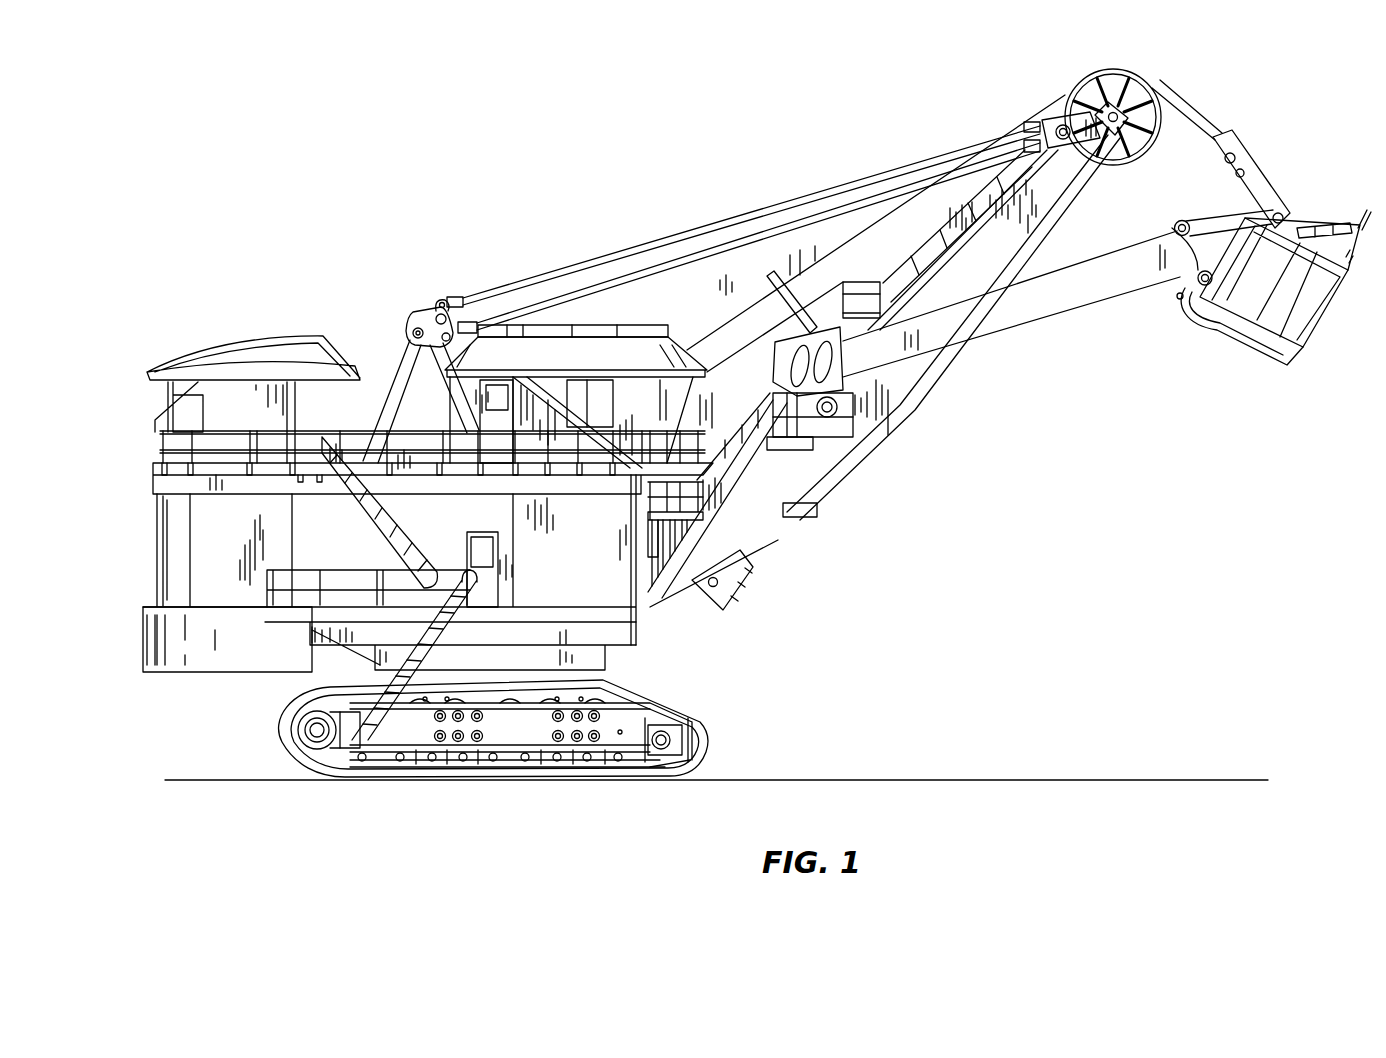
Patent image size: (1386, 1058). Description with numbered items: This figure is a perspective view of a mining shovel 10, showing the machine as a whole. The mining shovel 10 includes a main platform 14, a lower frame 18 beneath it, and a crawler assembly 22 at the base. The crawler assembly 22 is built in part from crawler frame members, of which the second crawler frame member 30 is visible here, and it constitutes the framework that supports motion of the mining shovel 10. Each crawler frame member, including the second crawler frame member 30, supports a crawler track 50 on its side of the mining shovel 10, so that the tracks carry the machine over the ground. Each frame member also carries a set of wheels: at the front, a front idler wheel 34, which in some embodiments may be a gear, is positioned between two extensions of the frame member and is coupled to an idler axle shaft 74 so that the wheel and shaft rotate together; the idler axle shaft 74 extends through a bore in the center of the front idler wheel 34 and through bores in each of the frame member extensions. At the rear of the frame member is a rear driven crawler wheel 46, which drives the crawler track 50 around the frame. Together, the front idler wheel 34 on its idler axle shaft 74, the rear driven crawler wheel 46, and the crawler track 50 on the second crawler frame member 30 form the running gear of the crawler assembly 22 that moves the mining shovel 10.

The mining shovel 10 is at (262, 248).
The main platform 14 is at (570, 652).
The lower frame 18 is at (478, 665).
The crawler assembly 22 is at (696, 664).
The second crawler frame member 30 is at (510, 727).
The front idler wheel 34 is at (682, 765).
The rear driven crawler wheel 46 is at (317, 727).
The crawler track 50 is at (700, 717).
The idler axle shaft 74 is at (660, 745).